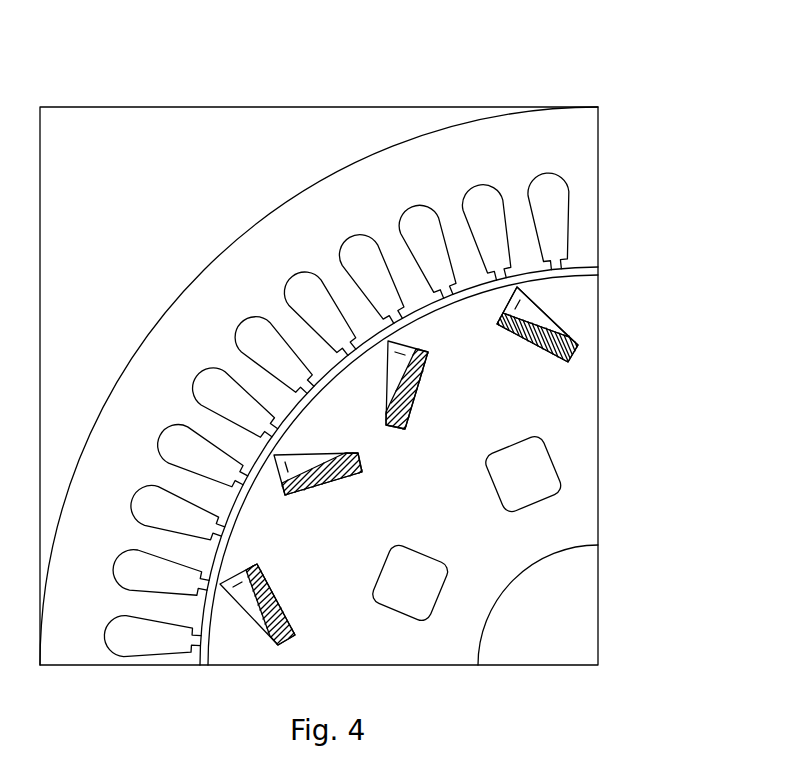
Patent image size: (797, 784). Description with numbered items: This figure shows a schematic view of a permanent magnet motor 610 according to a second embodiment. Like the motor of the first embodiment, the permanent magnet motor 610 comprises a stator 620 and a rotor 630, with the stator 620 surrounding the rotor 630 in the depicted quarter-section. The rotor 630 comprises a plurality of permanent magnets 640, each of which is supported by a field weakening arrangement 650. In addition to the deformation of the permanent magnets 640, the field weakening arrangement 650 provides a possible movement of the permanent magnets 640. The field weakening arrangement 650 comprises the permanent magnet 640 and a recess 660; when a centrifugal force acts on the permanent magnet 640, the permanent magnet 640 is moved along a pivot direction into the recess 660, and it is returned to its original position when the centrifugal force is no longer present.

The permanent magnet motor 610 is at (530, 95).
The stator 620 is at (245, 265).
The rotor 630 is at (582, 488).
The permanent magnet 640 is at (575, 362).
The field weakening arrangement 650 is at (572, 325).
The recess 660 is at (537, 308).